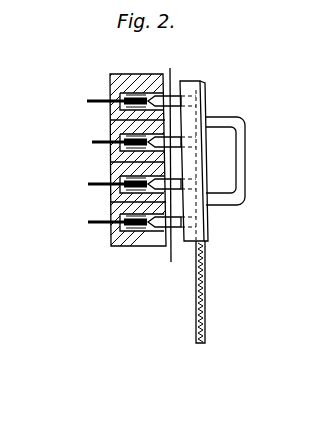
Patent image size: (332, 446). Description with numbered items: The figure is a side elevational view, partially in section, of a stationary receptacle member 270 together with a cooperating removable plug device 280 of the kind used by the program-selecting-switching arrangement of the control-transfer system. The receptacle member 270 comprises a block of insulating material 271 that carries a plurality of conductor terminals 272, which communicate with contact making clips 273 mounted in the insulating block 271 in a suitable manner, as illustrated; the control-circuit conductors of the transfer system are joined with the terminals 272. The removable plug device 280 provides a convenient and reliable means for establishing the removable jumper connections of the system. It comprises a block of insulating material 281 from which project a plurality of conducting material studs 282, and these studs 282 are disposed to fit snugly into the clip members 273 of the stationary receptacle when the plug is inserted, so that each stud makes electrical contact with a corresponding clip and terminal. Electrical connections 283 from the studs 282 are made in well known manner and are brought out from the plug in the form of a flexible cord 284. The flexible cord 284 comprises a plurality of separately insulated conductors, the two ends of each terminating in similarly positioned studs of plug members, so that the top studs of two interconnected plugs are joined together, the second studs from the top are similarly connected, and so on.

The stationary receptacle member 270 is at (134, 70).
The block of insulating material 271 is at (130, 247).
The conductor terminals 272 is at (98, 100).
The contact making clips 273 is at (135, 119).
The removable plug device 280 is at (288, 166).
The block of insulating material 281 is at (207, 111).
The conducting material studs 282 is at (176, 165).
The electrical connections 283 is at (200, 226).
The flexible cord 284 is at (206, 308).